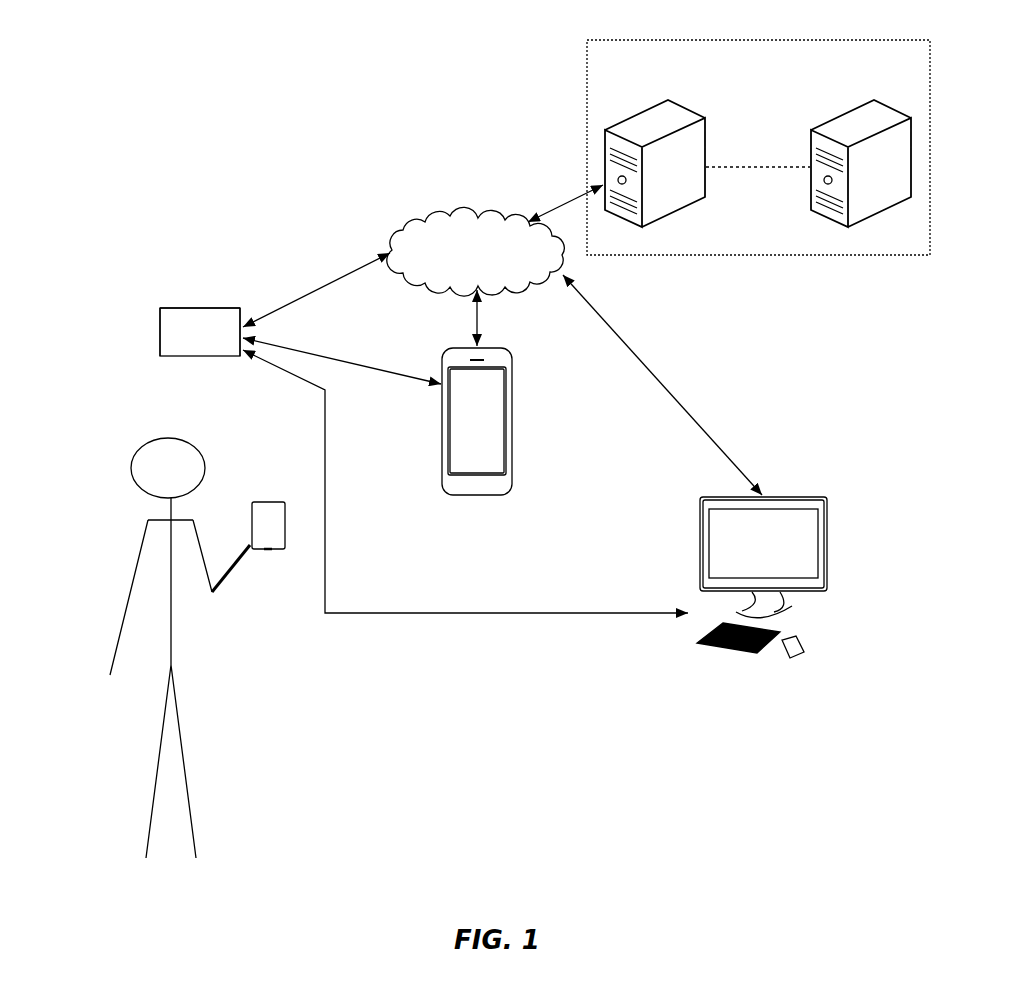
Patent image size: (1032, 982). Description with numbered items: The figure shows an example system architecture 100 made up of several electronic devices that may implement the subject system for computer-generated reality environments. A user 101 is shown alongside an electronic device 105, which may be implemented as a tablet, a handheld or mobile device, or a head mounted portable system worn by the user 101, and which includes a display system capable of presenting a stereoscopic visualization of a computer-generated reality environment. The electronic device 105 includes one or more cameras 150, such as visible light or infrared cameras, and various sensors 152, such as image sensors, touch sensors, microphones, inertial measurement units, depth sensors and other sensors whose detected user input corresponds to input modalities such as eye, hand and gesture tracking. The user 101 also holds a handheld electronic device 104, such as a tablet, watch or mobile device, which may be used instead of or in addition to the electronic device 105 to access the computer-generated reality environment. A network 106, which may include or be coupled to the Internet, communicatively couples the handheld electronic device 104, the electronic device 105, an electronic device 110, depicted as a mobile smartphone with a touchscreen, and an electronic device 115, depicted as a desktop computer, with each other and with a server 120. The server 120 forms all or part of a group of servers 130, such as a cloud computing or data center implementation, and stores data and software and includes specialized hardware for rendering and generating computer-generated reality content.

The system architecture 100 is at (184, 15).
The user 101 is at (148, 534).
The handheld electronic device 104 is at (276, 500).
The electronic device 105 is at (229, 307).
The network 106 is at (477, 212).
The electronic device 110 is at (477, 497).
The electronic device 115 is at (768, 663).
The server 120 is at (632, 113).
The group of servers 130 is at (586, 72).
The camera 150 is at (203, 307).
The sensors 152 is at (160, 307).